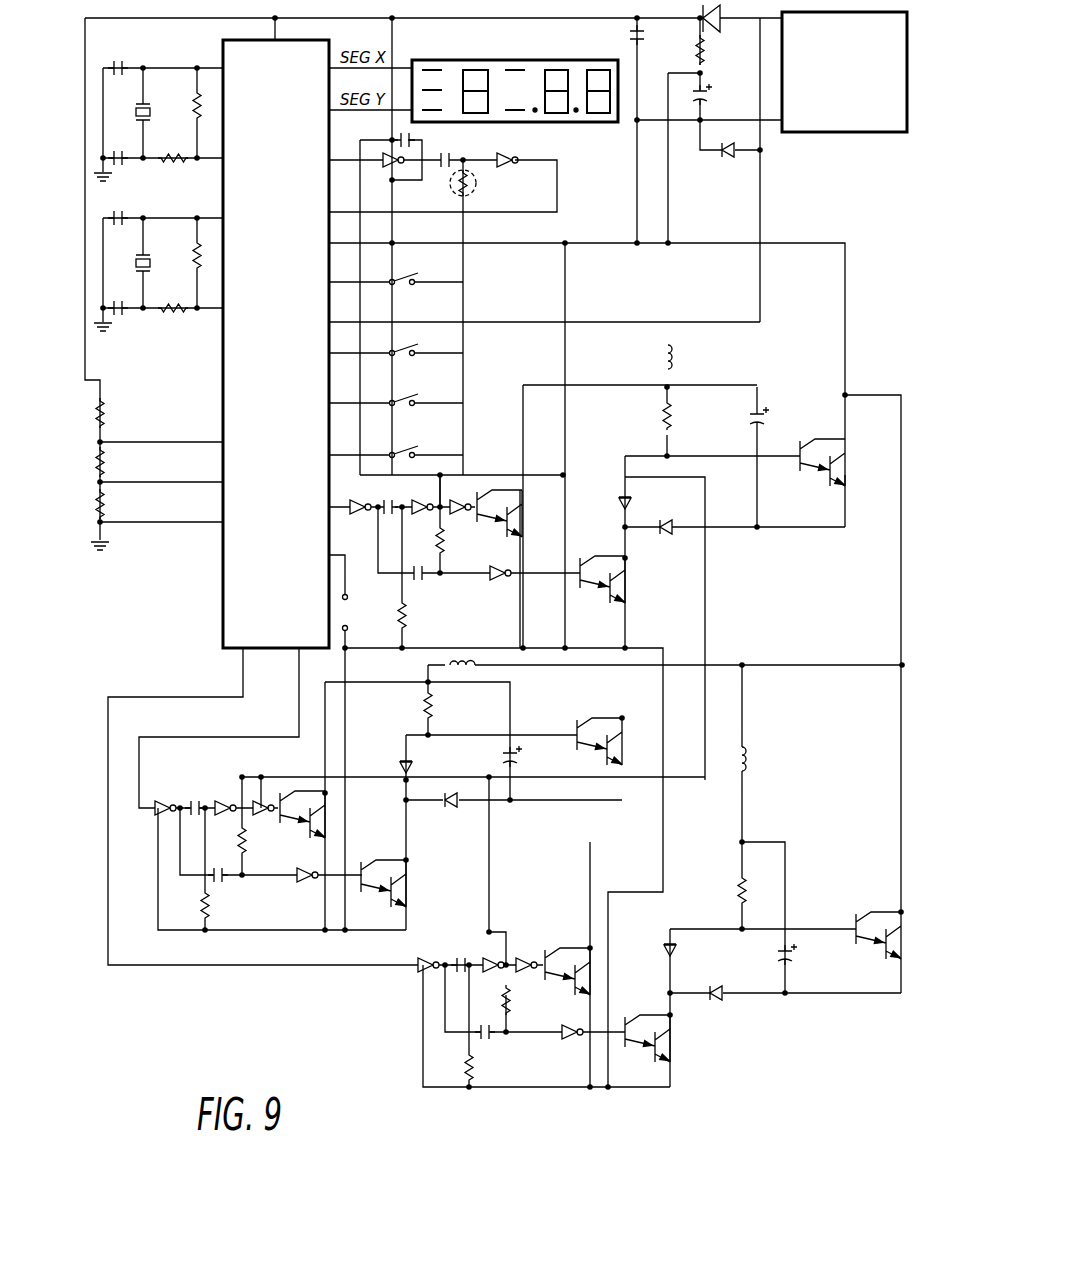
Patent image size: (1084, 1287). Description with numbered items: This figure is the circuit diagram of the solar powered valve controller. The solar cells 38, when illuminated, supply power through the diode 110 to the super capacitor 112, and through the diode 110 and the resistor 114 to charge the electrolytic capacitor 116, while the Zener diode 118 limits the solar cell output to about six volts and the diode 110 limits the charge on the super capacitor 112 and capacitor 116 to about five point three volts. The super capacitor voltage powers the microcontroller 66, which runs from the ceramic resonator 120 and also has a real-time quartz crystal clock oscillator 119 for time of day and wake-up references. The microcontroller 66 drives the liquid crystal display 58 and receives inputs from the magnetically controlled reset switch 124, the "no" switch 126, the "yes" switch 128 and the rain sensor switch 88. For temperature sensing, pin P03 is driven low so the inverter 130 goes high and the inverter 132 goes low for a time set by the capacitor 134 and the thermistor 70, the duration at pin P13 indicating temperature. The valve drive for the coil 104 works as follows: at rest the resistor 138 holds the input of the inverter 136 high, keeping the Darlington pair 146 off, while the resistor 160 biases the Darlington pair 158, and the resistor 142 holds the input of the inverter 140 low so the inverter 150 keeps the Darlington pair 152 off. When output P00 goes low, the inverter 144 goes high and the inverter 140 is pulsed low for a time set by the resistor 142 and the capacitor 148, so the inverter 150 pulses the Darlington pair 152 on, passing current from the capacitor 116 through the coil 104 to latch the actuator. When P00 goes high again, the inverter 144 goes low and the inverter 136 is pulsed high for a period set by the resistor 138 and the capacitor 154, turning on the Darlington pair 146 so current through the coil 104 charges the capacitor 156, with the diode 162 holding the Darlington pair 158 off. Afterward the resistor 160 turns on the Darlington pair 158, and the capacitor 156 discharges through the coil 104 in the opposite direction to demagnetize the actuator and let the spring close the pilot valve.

The microcontroller 66 is at (237, 52).
The real-time quartz crystal clock oscillator 119 is at (160, 113).
The ceramic resonator 120 is at (160, 265).
The liquid crystal display 58 is at (462, 60).
The super capacitor 112 is at (630, 36).
The resistor 114 is at (700, 52).
The diode 110 is at (724, 28).
The electrolytic capacitor 116 is at (706, 94).
The Zener diode 118 is at (728, 164).
The solar cells 38 is at (822, 132).
The inverter 130 is at (378, 164).
The capacitor 134 is at (444, 170).
The inverter 132 is at (504, 152).
The thermistor 70 is at (478, 190).
The reset switch 124 is at (408, 287).
The "no" switch 126 is at (408, 357).
The "yes" switch 128 is at (408, 408).
The magnetically controlled switch 88 is at (416, 446).
The inverter 140 is at (432, 488).
The inverter 144 is at (358, 500).
The capacitor 148 is at (388, 520).
The inverter 150 is at (462, 512).
The Darlington pair 152 is at (520, 520).
The diode 162 is at (616, 506).
The Darlington pair 146 is at (614, 584).
The resistor 138 is at (446, 556).
The capacitor 154 is at (418, 586).
The inverter 136 is at (504, 580).
The resistor 142 is at (398, 610).
The coil 104 is at (670, 356).
The resistor 160 is at (672, 424).
The capacitor 156 is at (766, 420).
The Darlington pair 158 is at (836, 470).